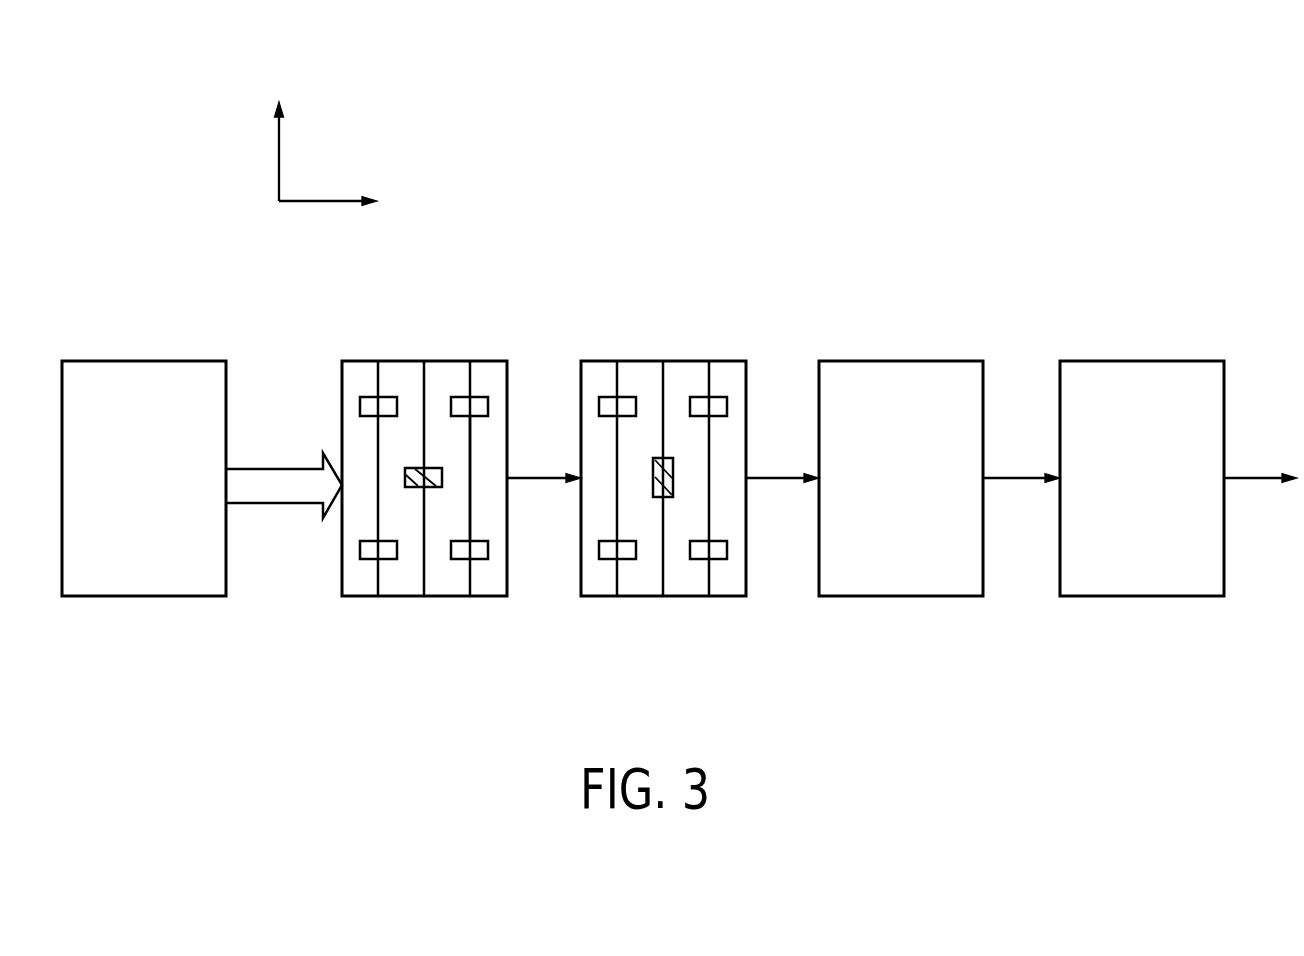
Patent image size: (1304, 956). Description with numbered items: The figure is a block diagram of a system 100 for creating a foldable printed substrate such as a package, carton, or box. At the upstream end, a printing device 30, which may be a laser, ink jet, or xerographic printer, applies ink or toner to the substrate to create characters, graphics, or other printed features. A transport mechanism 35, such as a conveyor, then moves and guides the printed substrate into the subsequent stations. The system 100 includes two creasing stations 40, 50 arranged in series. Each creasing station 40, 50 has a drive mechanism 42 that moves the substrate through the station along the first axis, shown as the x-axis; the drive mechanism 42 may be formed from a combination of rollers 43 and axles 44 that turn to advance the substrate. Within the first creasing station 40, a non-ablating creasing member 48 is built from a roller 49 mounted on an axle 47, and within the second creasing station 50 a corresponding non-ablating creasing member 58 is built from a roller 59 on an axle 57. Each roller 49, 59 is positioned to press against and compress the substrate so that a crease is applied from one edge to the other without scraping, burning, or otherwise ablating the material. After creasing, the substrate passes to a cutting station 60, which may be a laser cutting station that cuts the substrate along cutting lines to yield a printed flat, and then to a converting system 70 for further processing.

The system 100 is at (124, 124).
The printing device 30 is at (137, 632).
The transport mechanism 35 is at (279, 466).
The creasing station 40 is at (425, 633).
The drive mechanism 42 is at (470, 343).
The rollers 43 is at (488, 407).
The axles 44 is at (487, 462).
The axle 47 is at (441, 582).
The non-ablating creasing member 48 is at (424, 343).
The roller 49 is at (405, 476).
The creasing station 50 is at (663, 633).
The axle 57 is at (679, 580).
The non-ablating creasing member 58 is at (663, 343).
The roller 59 is at (653, 472).
The cutting station 60 is at (900, 633).
The converting system 70 is at (1144, 633).